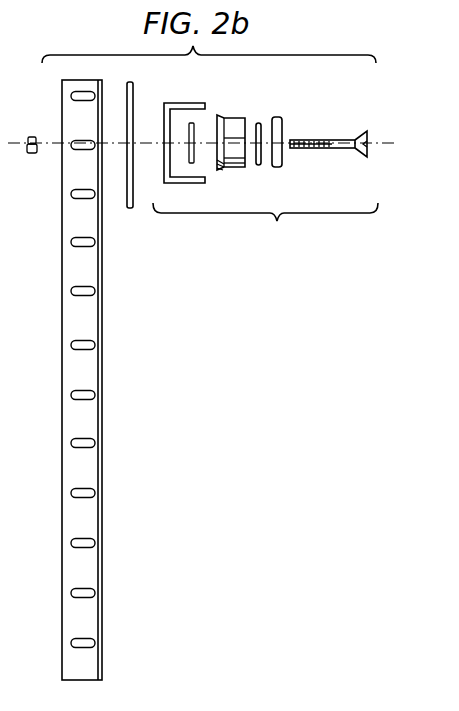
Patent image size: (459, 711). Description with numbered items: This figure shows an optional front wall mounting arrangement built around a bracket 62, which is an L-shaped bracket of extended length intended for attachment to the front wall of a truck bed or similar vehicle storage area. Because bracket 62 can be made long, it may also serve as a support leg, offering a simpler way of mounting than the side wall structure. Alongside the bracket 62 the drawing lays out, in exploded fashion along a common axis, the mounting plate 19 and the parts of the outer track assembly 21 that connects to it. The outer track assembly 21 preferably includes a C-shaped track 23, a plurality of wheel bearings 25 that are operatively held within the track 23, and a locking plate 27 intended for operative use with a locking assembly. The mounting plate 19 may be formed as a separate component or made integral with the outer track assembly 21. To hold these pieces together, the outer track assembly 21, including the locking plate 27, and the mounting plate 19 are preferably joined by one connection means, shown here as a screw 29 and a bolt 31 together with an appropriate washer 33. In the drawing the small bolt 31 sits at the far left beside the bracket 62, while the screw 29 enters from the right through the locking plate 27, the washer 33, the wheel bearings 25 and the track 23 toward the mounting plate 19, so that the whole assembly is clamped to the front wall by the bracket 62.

The bracket 62 is at (102, 330).
The mounting plate 19 is at (130, 208).
The bolt 31 is at (33, 136).
The outer track assembly 21 is at (265, 225).
The track 23 is at (185, 103).
The wheel bearings 25 is at (236, 118).
The washer 33 is at (258, 165).
The locking plate 27 is at (277, 117).
The screw 29 is at (337, 148).